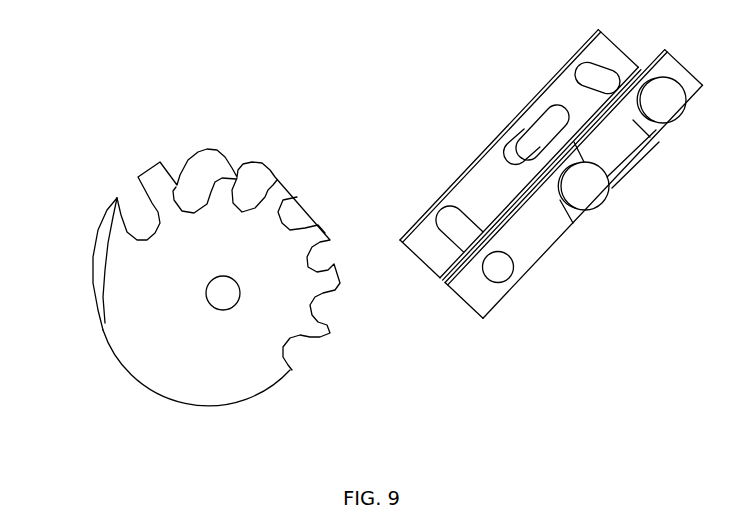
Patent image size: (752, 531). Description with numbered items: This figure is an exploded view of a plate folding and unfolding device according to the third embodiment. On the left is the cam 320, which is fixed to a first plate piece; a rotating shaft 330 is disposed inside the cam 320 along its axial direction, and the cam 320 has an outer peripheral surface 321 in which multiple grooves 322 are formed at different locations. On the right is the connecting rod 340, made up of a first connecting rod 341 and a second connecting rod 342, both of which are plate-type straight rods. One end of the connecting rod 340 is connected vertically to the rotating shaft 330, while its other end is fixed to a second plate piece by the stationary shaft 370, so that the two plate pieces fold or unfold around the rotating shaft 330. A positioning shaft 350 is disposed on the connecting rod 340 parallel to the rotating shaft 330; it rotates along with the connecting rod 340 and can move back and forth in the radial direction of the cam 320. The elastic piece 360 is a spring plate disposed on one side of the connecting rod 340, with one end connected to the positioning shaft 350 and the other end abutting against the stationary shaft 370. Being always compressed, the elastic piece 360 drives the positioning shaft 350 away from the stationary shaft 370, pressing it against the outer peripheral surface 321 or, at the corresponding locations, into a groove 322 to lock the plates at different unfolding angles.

The cam 320 is at (163, 347).
The outer peripheral surface 321 is at (100, 240).
The groove 322 is at (300, 353).
The rotating shaft 330 is at (498, 268).
The connecting rod 340 is at (504, 174).
The first connecting rod 341 is at (533, 237).
The second connecting rod 342 is at (470, 193).
The positioning shaft 350 is at (525, 150).
The elastic piece 360 is at (622, 148).
The stationary shaft 370 is at (593, 78).